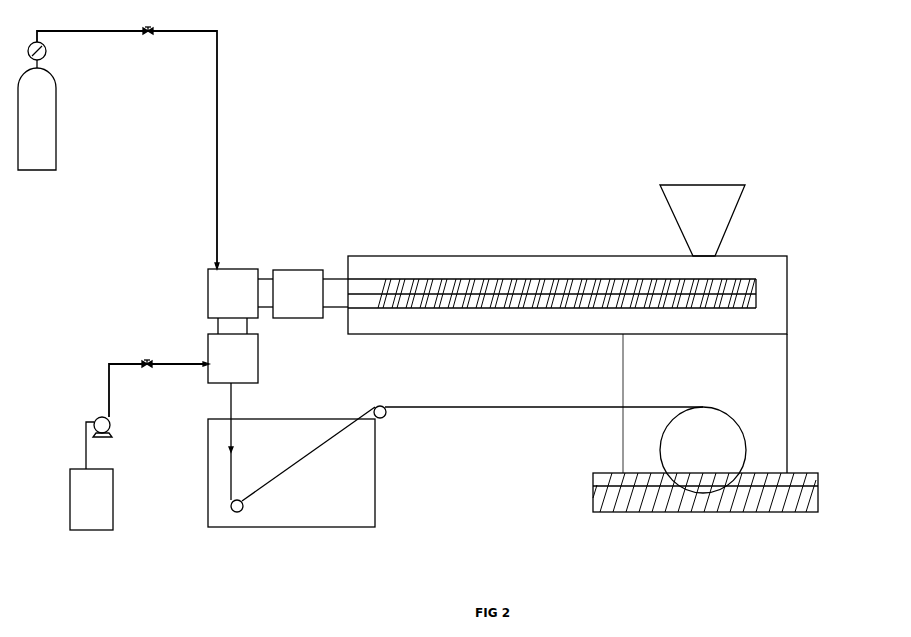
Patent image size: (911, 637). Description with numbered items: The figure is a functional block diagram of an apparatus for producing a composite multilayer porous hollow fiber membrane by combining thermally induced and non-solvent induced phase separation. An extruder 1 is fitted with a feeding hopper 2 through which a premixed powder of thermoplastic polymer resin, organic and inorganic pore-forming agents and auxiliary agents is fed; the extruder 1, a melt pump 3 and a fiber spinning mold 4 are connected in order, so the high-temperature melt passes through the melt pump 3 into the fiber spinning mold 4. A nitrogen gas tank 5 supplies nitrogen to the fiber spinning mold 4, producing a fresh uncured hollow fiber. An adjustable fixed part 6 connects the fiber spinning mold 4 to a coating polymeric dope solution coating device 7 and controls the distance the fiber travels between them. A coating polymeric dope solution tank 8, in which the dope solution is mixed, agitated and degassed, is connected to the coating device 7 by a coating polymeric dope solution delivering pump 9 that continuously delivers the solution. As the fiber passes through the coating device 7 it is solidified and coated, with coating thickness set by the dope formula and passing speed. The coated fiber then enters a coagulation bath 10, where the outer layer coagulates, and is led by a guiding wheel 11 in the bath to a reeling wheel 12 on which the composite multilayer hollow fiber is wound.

The extruder 1 is at (765, 283).
The feeding hopper 2 is at (745, 187).
The melt pump 3 is at (282, 275).
The fiber spinning mold 4 is at (230, 282).
The nitrogen gas tank 5 is at (47, 150).
The adjustable fixed part 6 is at (218, 326).
The coating polymeric dope solution coating device 7 is at (250, 353).
The coating polymeric dope solution tank 8 is at (87, 506).
The coating polymeric dope solution delivering pump 9 is at (97, 420).
The coagulation bath 10 is at (288, 520).
The guiding wheel 11 is at (386, 413).
The reeling wheel 12 is at (725, 428).